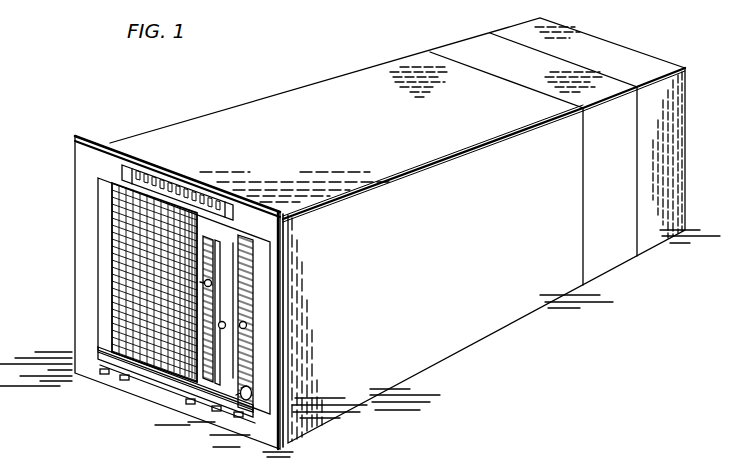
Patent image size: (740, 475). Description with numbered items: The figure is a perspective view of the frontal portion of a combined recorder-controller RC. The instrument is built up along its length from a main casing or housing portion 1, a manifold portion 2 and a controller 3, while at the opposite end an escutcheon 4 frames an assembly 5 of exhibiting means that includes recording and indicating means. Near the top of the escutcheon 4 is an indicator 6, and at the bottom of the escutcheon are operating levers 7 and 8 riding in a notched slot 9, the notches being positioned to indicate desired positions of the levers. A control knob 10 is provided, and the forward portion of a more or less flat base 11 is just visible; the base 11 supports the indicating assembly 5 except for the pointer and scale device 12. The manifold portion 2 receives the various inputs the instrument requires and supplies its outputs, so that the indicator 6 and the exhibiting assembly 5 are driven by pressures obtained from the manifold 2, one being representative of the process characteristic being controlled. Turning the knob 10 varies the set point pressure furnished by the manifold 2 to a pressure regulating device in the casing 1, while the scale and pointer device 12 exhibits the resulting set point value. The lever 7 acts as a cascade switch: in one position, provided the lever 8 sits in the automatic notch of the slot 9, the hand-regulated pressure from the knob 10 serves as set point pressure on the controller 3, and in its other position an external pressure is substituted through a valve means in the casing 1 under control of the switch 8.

The recorder-controller RC is at (277, 90).
The main casing or housing portion 1 is at (315, 137).
The manifold portion 2 is at (503, 65).
The controller 3 is at (625, 71).
The escutcheon 4 is at (73, 161).
The assembly of exhibiting means 5 is at (154, 282).
The indicator 6 is at (167, 171).
The operating lever 7 is at (92, 376).
The operating lever 8 is at (185, 412).
The notched slot 9 is at (128, 376).
The control knob 10 is at (248, 407).
The base 11 is at (160, 390).
The pointer and scale device 12 is at (248, 333).